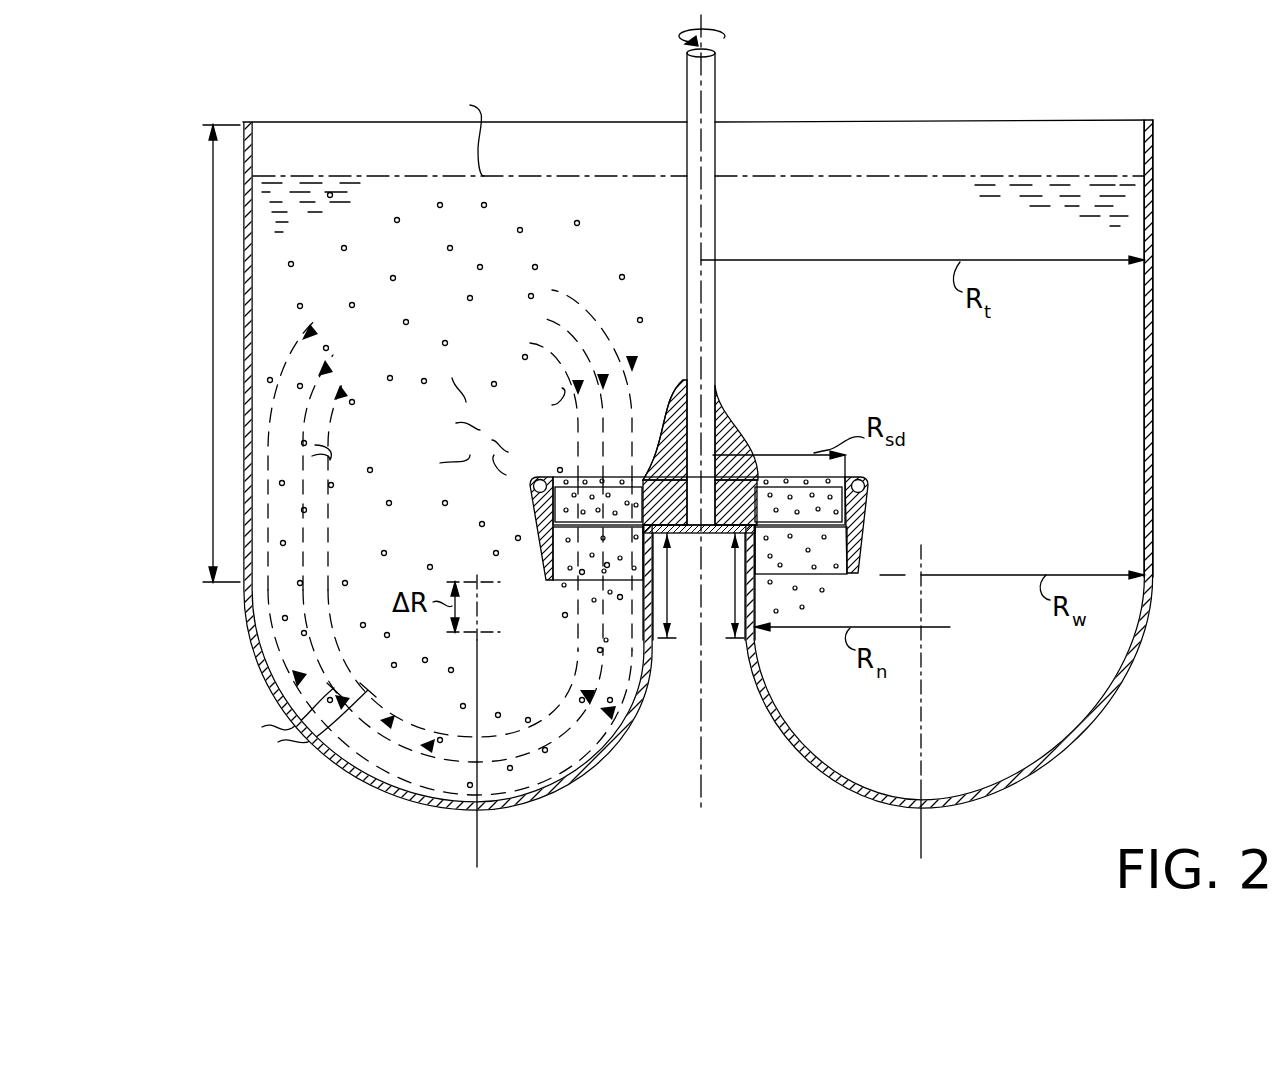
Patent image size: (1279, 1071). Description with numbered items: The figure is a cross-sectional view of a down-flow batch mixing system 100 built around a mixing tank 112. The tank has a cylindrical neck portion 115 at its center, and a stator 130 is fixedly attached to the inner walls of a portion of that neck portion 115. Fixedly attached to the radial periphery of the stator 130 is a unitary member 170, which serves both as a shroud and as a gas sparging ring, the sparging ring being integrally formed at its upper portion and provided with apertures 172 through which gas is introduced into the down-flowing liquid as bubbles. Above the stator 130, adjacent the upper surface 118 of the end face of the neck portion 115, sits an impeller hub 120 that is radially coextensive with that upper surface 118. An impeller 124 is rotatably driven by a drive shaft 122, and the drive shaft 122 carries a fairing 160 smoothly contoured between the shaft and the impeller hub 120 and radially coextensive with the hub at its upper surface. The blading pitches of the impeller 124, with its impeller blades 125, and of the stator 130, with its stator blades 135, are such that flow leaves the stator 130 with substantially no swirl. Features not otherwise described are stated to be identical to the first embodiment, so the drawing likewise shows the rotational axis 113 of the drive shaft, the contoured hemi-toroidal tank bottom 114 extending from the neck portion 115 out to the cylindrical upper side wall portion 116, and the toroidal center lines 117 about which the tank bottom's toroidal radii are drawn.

The down-flow batch mixing system 100 is at (312, 792).
The mixing tank 112 is at (1153, 495).
The axis of rotation 113 is at (694, 40).
The tank wall 114 is at (250, 637).
The cylindrical neck portion 115 is at (667, 620).
The liquid height 116 is at (213, 283).
The toroidal axis 117 is at (477, 845).
The upper surface 118 is at (682, 538).
The impeller hub 120 is at (763, 468).
The drive shaft 122 is at (715, 300).
The impeller 124 is at (799, 472).
The rim ring 125 is at (860, 480).
The stator 130 is at (552, 581).
The lower right sponge block 135 is at (828, 570).
The fairing 160 is at (672, 418).
The unitary member 170 is at (862, 515).
The apertures 172 is at (588, 481).